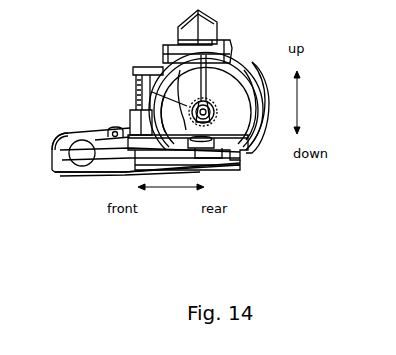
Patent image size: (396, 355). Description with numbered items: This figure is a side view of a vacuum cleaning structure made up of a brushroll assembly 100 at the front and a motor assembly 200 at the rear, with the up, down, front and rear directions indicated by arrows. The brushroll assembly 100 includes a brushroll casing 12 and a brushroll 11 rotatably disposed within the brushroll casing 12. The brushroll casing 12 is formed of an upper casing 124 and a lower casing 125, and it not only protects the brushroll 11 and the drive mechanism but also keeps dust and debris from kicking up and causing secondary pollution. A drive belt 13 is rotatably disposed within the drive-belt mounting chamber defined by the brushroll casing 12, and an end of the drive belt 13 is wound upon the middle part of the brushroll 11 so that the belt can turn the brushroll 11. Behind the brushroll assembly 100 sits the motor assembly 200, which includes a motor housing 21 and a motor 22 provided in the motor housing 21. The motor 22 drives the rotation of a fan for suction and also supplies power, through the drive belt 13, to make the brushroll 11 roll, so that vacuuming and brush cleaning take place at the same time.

The brushroll assembly 100 is at (73, 112).
The brushroll 11 is at (76, 143).
The brushroll casing 12 is at (51, 146).
The drive belt 13 is at (94, 127).
The upper casing 124 is at (122, 129).
The lower casing 125 is at (122, 176).
The motor housing 21 is at (262, 126).
The motor 22 is at (219, 157).
The motor assembly 200 is at (282, 148).